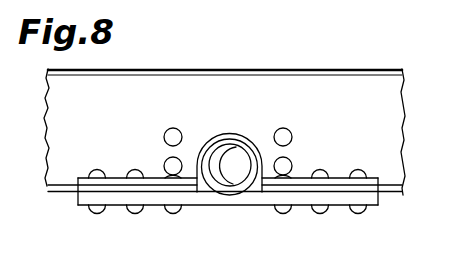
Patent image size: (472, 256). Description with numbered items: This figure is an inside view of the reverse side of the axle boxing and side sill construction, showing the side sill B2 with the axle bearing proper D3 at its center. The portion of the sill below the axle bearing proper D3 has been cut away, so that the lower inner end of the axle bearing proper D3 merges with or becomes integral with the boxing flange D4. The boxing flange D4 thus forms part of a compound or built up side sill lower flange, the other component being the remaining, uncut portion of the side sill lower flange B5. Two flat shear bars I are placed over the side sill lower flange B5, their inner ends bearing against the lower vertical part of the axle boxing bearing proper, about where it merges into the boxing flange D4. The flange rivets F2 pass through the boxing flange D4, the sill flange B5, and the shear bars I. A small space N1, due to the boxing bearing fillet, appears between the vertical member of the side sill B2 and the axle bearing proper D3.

The space N1 is at (219, 139).
The axle bearing proper D3 is at (241, 141).
The plate B2 is at (224, 132).
The flat shear bar I is at (336, 182).
The side sill lower flange B5 is at (391, 193).
The flange rivets F2 is at (321, 214).
The boxing flange D4 is at (336, 202).